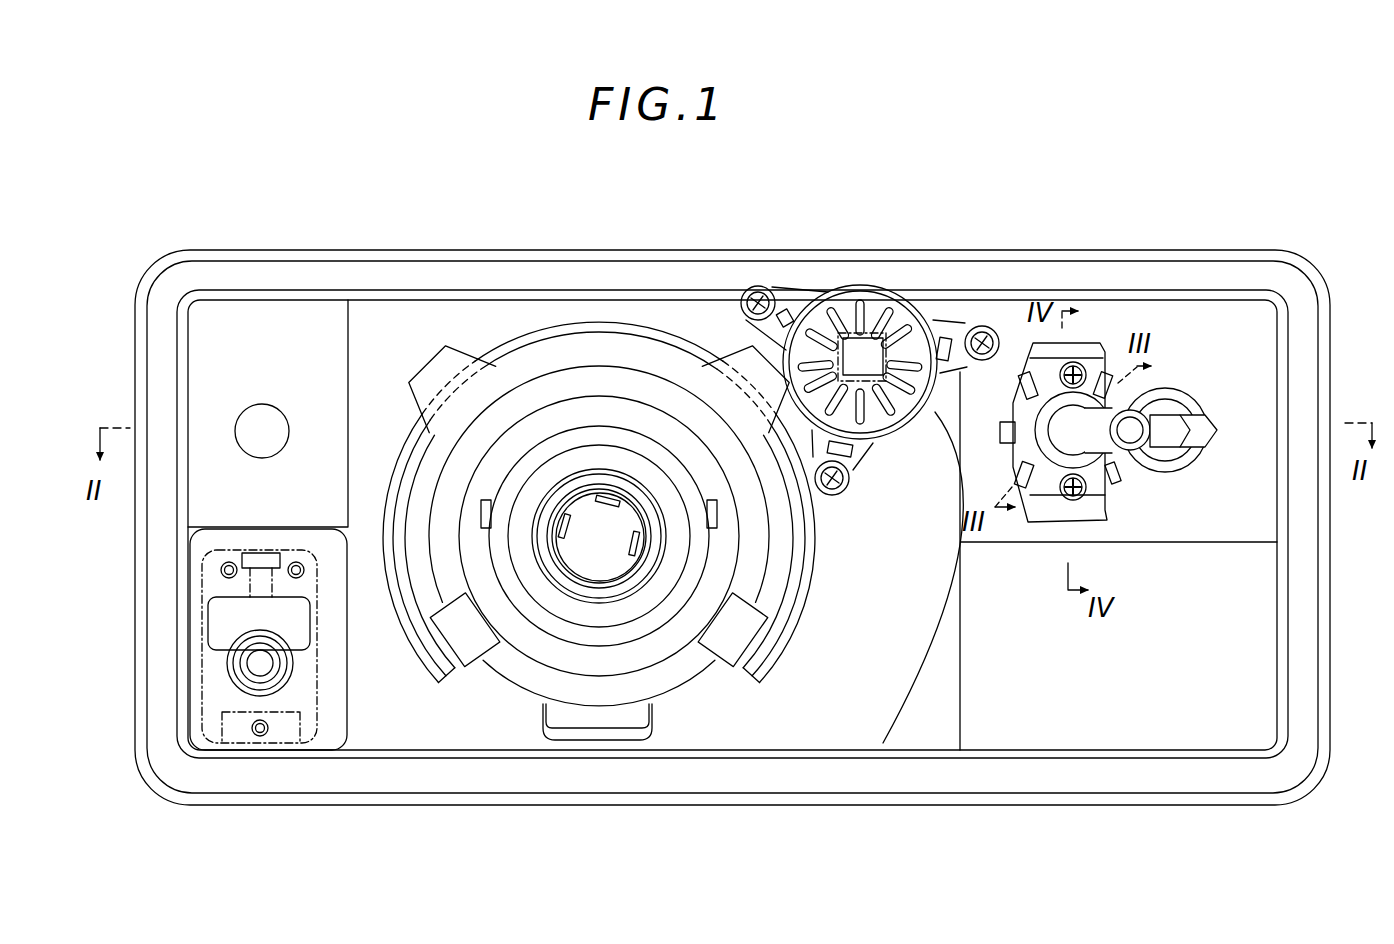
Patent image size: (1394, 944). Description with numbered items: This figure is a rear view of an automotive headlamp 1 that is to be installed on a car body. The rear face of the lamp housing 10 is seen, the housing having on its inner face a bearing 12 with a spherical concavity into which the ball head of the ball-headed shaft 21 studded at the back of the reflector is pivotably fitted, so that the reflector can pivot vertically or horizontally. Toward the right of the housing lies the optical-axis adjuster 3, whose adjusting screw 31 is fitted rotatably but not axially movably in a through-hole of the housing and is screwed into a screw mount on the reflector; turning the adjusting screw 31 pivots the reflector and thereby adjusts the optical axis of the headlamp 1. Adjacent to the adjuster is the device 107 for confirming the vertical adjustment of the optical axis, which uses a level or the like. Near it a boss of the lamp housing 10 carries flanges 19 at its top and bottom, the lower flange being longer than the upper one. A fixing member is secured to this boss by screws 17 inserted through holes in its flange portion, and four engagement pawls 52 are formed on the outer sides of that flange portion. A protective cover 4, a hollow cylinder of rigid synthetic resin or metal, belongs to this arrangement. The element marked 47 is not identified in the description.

The automotive headlamp 1 is at (479, 243).
The lamp housing 10 is at (378, 277).
The bearing 12 is at (248, 407).
The ball-headed shaft 21 is at (219, 309).
The optical-axis adjuster 3 is at (718, 511).
The device for confirmation of the vertical adjustment of the optical axis 107 is at (875, 312).
The bulb holder plate 47 is at (1018, 378).
The engagement pawls 52 is at (1022, 357).
The protective cover 4 is at (1102, 357).
The flanges 19 is at (1082, 366).
The screws 17 is at (1047, 515).
The adjusting screw 31 is at (1217, 415).